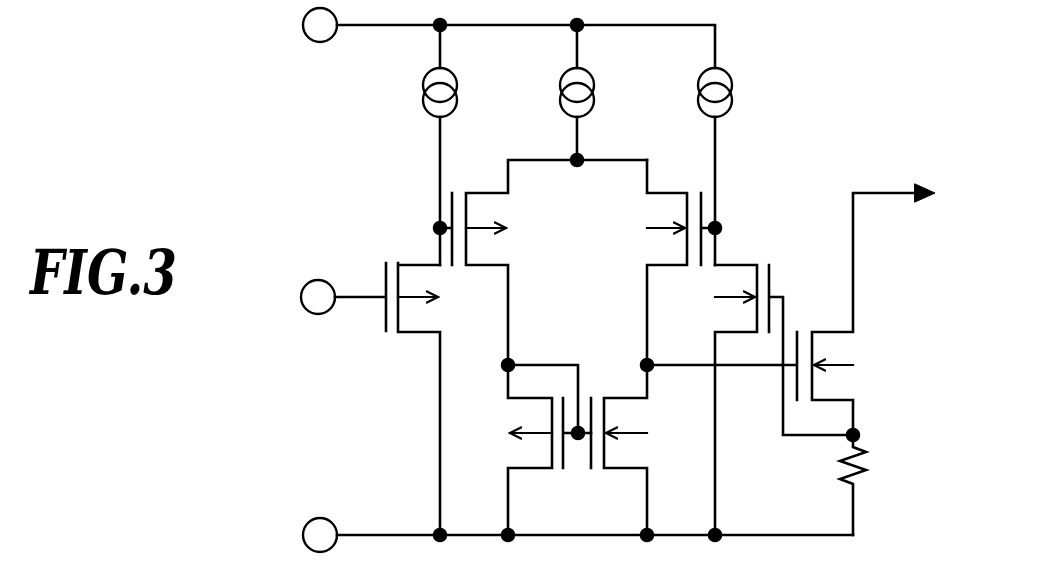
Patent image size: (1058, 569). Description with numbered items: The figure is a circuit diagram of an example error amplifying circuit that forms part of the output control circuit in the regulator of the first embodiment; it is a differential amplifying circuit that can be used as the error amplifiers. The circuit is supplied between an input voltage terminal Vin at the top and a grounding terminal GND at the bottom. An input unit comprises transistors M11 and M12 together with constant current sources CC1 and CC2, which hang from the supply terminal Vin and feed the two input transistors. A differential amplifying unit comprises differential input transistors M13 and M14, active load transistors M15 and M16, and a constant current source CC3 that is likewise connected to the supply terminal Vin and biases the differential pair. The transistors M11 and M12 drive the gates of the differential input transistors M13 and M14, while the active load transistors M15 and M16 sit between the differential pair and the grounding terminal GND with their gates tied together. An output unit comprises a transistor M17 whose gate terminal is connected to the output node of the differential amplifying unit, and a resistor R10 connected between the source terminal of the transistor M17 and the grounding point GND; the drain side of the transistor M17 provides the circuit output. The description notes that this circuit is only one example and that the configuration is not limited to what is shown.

The input voltage terminal Vin is at (482, 38).
The ground terminal GND is at (543, 537).
The constant current source CC1 is at (407, 142).
The constant current source CC2 is at (751, 166).
The constant current source CC3 is at (609, 92).
The transistor M11 is at (370, 379).
The transistor M12 is at (781, 389).
The differential input transistor M13 is at (543, 262).
The differential input transistor M14 is at (645, 262).
The active load transistor M15 is at (512, 450).
The active load transistor M16 is at (649, 450).
The transistor M17 is at (791, 312).
The resistor R10 is at (878, 485).